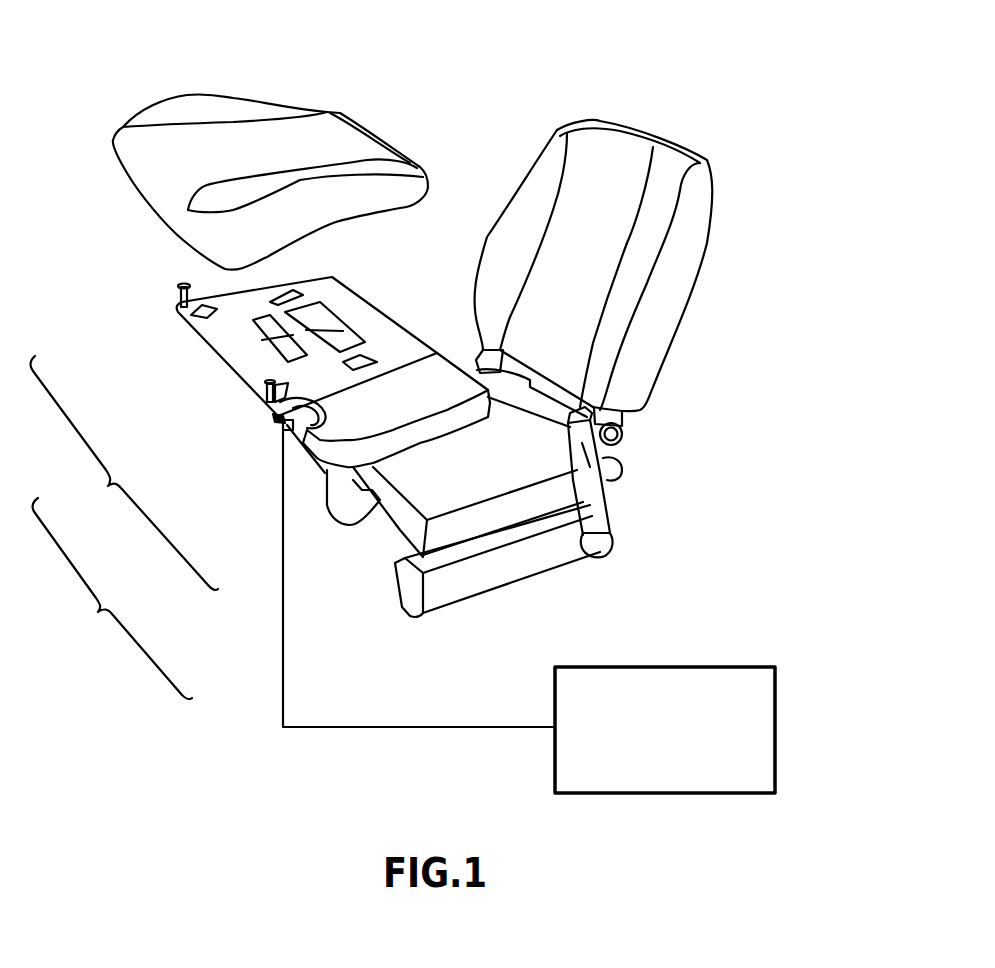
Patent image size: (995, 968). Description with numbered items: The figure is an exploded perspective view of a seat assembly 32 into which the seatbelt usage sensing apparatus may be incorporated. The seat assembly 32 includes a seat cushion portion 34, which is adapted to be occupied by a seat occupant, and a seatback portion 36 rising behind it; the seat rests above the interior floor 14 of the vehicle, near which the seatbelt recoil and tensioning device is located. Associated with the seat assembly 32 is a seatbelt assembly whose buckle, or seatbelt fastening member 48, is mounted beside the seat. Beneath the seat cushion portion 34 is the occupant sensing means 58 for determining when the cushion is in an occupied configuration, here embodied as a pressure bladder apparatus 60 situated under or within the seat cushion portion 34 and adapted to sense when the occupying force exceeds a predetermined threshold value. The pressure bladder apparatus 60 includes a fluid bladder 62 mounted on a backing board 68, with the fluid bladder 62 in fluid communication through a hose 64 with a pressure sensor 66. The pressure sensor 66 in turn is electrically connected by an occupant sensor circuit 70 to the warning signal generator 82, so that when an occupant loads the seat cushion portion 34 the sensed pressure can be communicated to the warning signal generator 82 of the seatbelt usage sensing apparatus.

The interior floor 14 is at (613, 568).
The seat assembly 32 is at (668, 409).
The seat cushion portion 34 is at (208, 143).
The seatback portion 36 is at (697, 243).
The seatbelt fastening member 48 is at (607, 477).
The occupant sensing means 58 is at (112, 598).
The pressure bladder apparatus 60 is at (124, 473).
The fluid bladder 62 is at (223, 325).
The hose 64 is at (327, 460).
The pressure sensor 66 is at (270, 416).
The backing board 68 is at (320, 437).
The occupant sensor circuit 70 is at (283, 615).
The warning signal generator 82 is at (777, 694).